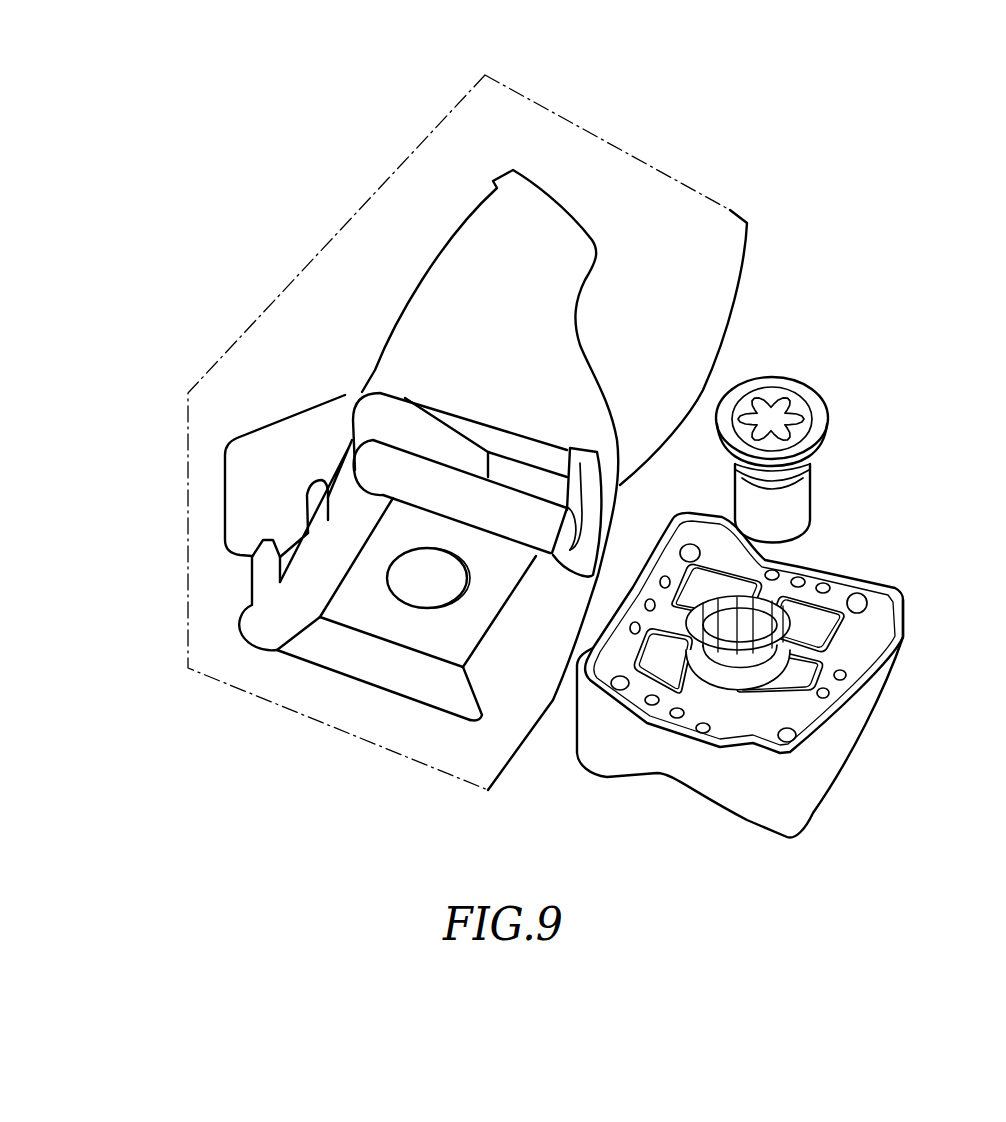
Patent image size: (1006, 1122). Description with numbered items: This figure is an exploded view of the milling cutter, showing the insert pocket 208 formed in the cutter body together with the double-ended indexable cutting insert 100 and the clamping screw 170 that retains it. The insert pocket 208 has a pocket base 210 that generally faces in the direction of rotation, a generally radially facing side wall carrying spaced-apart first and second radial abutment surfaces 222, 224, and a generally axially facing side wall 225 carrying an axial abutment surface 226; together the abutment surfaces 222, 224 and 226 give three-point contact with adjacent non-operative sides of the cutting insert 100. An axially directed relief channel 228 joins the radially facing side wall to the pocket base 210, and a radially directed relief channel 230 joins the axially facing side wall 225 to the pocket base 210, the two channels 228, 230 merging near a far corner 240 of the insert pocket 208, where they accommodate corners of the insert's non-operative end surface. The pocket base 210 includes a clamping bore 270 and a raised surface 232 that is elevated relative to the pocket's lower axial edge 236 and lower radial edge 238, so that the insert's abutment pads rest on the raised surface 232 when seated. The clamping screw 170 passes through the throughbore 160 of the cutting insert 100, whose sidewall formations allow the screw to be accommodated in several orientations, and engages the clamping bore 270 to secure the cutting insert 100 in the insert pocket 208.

The cutting insert 100 is at (765, 709).
The throughbore 160 is at (745, 677).
The clamping screw 170 is at (793, 515).
The insert pocket 208 is at (430, 425).
The pocket base 210 is at (406, 675).
The first radial abutment surface 222 is at (300, 543).
The second radial abutment surface 224 is at (332, 478).
The axially facing side wall 225 is at (465, 445).
The axial abutment surface 226 is at (524, 477).
The axially directed relief channel 228 is at (283, 612).
The radially directed relief channel 230 is at (535, 523).
The raised surface 232 is at (377, 613).
The lower axial edge 236 is at (373, 683).
The lower radial edge 238 is at (493, 712).
The far corner 240 is at (395, 515).
The clamping bore 270 is at (308, 450).